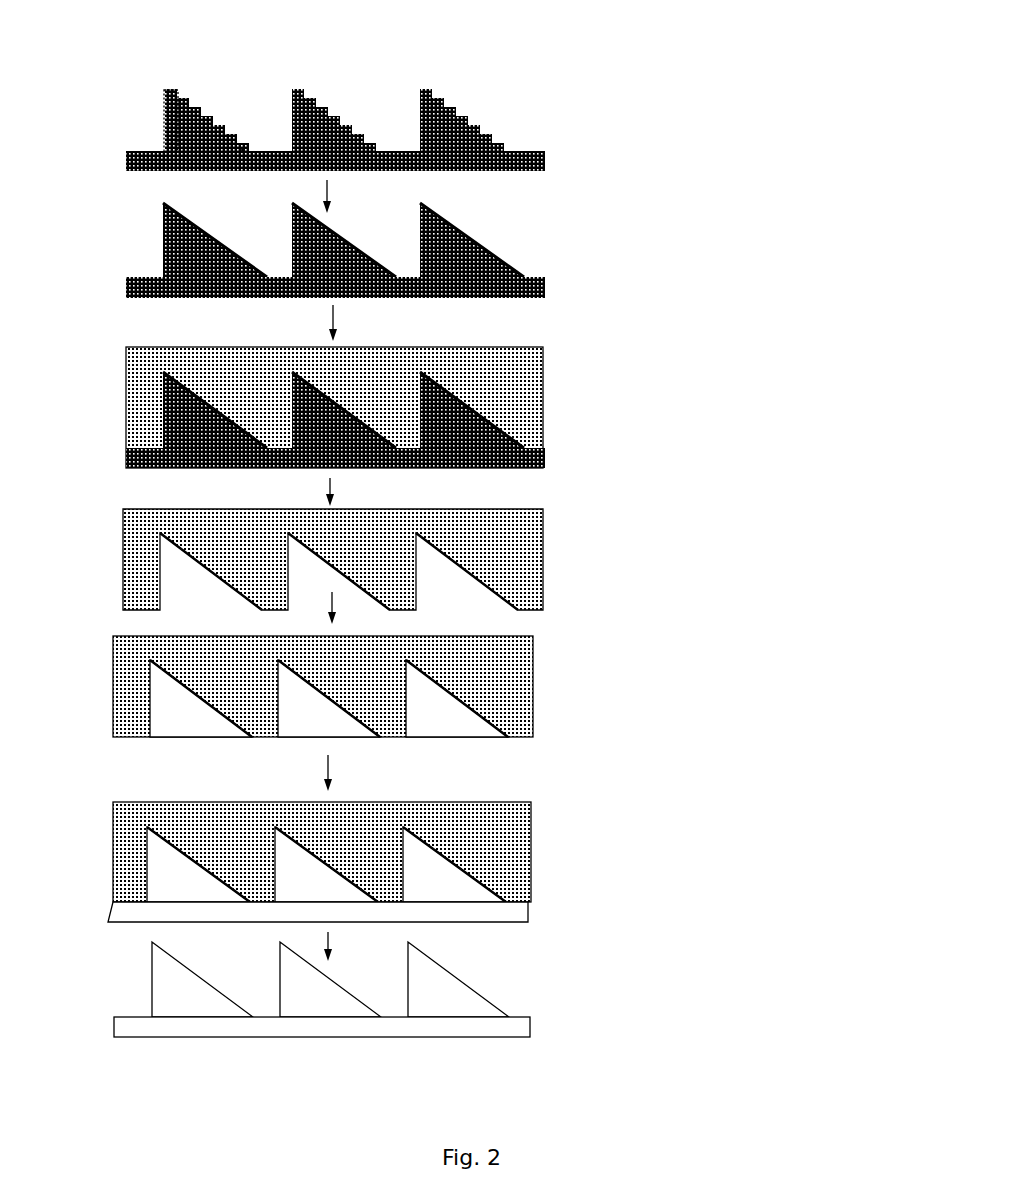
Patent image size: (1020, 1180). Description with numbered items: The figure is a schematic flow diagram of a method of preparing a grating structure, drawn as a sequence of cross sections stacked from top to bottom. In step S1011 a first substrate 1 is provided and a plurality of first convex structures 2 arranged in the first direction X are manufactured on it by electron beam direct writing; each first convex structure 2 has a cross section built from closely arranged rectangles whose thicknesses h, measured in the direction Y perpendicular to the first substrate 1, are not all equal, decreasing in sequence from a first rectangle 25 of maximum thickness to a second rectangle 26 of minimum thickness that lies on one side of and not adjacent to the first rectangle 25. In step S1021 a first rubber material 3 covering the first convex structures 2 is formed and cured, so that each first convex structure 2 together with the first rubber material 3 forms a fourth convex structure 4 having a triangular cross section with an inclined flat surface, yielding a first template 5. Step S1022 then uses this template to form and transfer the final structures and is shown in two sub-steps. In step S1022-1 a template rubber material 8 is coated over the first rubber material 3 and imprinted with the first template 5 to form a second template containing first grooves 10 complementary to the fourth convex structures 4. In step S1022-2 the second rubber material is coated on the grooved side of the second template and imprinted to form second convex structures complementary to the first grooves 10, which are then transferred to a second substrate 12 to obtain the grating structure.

The first substrate 1 is at (520, 160).
The first convex structures 2 is at (470, 125).
The first rubber material 3 is at (460, 225).
The fourth convex structures 4 is at (607, 215).
The first template 5 is at (658, 292).
The template rubber material 8 is at (515, 360).
The first grooves 10 is at (450, 568).
The second substrate 12 is at (498, 915).
The first rectangle 25 is at (168, 92).
The second rectangle 26 is at (244, 149).
The thicknesses of the rectangles h is at (152, 89).
The step of providing the first substrate and manufacturing the first convex structu S1011 is at (724, 143).
The step of forming and curing the first rubber material S1021 is at (724, 258).
The step of forming the second template S1022-1 is at (700, 556).
The step of forming the second convex structures S1022-2 is at (700, 999).
The step of forming and transferring the second convex structures S1022 is at (820, 717).
The first direction X is at (181, 1080).
The direction perpendicular to the first substrate Y is at (43, 987).